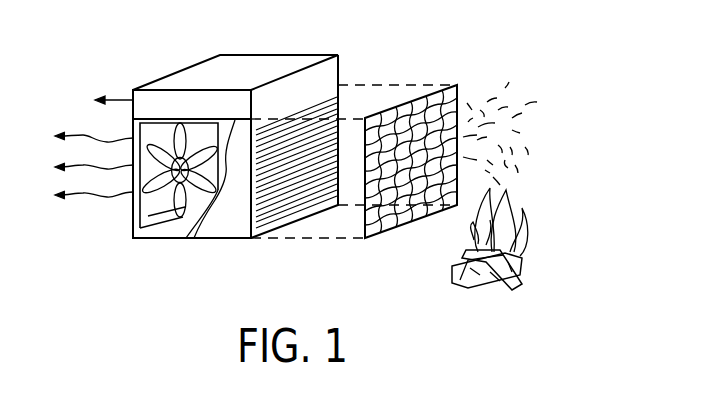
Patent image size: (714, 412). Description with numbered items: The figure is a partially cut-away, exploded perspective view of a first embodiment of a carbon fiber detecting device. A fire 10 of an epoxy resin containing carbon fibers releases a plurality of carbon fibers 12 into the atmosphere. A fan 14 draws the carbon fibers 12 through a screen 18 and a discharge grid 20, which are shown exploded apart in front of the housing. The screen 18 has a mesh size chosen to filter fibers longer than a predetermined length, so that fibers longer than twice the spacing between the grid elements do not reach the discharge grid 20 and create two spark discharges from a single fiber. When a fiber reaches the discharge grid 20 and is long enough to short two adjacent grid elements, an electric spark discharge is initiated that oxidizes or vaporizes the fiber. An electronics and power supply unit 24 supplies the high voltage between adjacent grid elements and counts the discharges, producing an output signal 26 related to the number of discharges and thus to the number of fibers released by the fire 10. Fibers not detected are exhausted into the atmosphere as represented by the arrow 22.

The fire 10 is at (522, 240).
The carbon fibers 12 is at (523, 130).
The fan 14 is at (140, 221).
The screen 18 is at (415, 218).
The discharge grid 20 is at (333, 278).
The arrow 22 is at (93, 198).
The electronics and power supply unit 24 is at (563, 52).
The output signal 26 is at (118, 100).